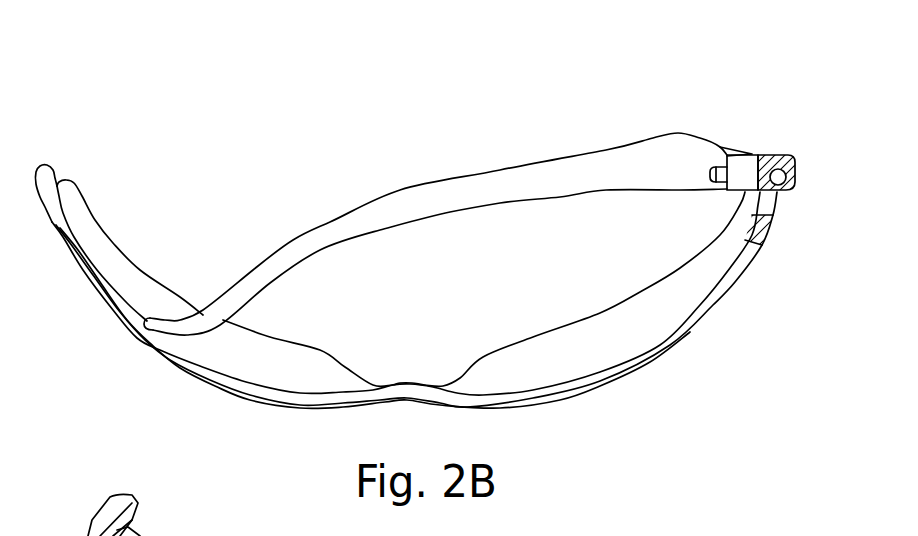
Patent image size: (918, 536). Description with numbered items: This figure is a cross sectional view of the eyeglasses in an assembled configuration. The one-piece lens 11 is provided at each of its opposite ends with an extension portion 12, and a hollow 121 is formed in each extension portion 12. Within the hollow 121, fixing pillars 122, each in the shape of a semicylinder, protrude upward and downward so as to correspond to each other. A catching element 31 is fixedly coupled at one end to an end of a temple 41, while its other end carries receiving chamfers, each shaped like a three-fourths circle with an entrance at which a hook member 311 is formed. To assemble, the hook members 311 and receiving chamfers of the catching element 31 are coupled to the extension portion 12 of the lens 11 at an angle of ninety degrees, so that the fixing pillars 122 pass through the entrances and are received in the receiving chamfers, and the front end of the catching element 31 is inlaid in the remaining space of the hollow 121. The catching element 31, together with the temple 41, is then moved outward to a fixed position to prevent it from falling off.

The lens 11 is at (623, 367).
The extension portion 12 is at (45, 178).
The hollow 121 is at (768, 207).
The fixing pillar 122 is at (781, 186).
The catching element 31 is at (759, 173).
The hook member 311 is at (781, 168).
The temple 41 is at (575, 177).